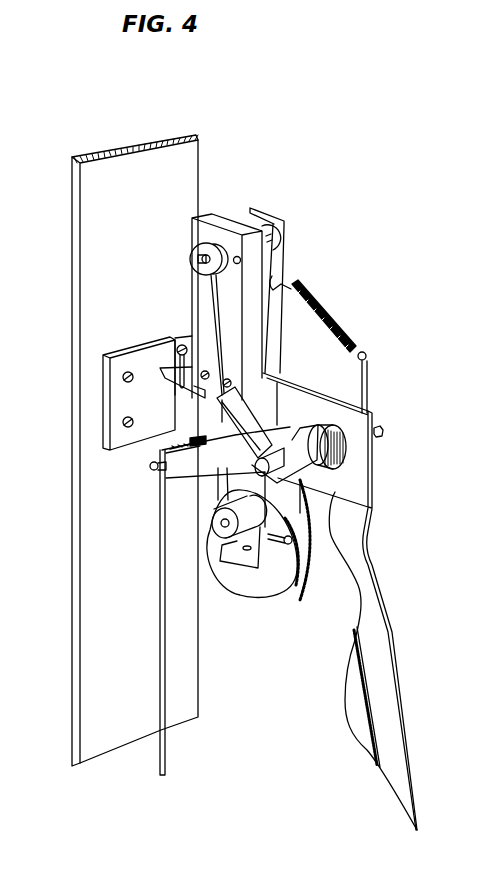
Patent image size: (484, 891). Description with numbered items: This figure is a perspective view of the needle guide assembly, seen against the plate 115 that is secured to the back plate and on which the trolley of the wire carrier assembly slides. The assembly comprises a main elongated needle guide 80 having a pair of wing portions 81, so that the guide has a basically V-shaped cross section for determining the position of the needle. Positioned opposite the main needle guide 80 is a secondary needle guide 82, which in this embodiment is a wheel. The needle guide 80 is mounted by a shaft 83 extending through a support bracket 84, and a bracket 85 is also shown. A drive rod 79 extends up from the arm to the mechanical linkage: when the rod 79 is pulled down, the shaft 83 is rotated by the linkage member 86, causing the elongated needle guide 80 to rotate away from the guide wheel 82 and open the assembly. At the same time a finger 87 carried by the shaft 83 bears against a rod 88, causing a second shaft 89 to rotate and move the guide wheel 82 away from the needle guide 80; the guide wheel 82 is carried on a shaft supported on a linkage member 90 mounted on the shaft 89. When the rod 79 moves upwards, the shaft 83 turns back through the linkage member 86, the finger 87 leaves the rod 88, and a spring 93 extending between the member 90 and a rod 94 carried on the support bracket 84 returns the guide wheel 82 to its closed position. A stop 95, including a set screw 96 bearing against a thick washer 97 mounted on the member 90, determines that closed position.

The plate 115 is at (88, 230).
The mounting bracket 85 is at (154, 393).
The rod 88 is at (208, 302).
The second shaft 89 is at (192, 260).
The linkage member 90 is at (277, 263).
The spring 93 is at (314, 302).
The rod 94 is at (369, 379).
The support bracket 84 is at (355, 480).
The shaft 83 is at (383, 427).
The finger 87 is at (248, 422).
The linkage member 86 is at (195, 467).
The drive rod 79 is at (160, 647).
The thick washer 97 is at (245, 500).
The set screw 96 is at (287, 548).
The secondary needle guide 82 is at (258, 590).
The stop 95 is at (290, 524).
The main elongated needle guide 80 is at (388, 698).
The wing portions 81 is at (357, 708).